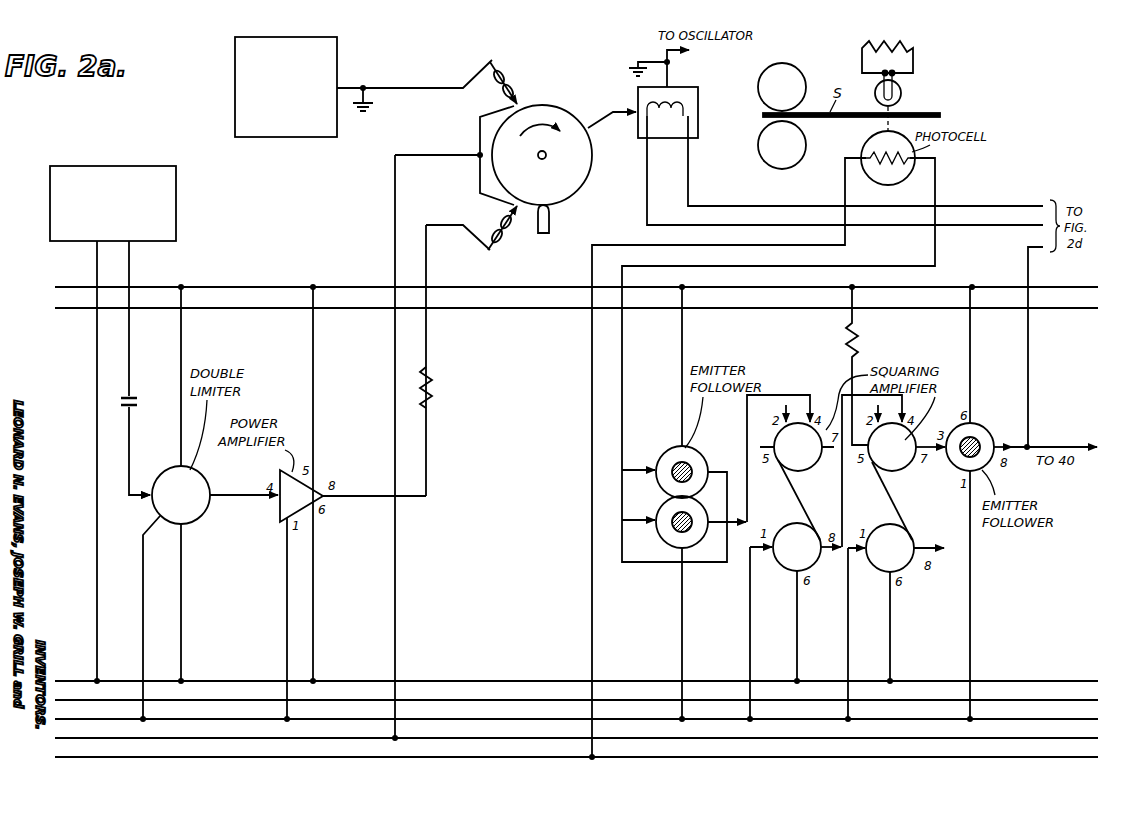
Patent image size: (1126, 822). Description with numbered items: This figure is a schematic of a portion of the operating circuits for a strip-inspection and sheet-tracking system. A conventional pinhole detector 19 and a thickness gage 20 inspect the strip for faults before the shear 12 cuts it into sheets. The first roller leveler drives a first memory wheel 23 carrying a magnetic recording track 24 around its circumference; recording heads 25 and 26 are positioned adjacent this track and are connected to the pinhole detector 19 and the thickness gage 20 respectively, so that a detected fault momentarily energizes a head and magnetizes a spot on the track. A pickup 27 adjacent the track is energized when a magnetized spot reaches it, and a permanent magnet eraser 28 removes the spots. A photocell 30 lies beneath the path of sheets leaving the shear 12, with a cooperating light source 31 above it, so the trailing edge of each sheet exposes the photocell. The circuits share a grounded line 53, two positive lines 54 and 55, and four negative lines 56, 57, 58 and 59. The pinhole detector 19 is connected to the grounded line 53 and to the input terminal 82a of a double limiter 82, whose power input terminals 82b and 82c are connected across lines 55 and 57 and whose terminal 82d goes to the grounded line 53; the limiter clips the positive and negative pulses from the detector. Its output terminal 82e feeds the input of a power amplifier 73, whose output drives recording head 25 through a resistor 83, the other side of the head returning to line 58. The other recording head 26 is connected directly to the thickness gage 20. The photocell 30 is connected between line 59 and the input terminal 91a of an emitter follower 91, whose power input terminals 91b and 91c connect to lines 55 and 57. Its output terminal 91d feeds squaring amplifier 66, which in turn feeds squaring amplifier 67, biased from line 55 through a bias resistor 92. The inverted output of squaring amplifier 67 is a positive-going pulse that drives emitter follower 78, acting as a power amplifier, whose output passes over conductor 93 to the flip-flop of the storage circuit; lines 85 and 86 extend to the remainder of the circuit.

The shear 12 is at (766, 96).
The pinhole detector 19 is at (167, 202).
The thickness gage 20 is at (328, 50).
The first memory wheel 23 is at (553, 187).
The magnetic recording track 24 is at (565, 113).
The recording head 25 is at (505, 242).
The recording head 26 is at (511, 82).
The pickup 27 is at (699, 104).
The permanent magnet eraser 28 is at (550, 222).
The photocell 30 is at (867, 150).
The light source 31 is at (902, 93).
The grounded line 53 is at (499, 681).
The line 54 is at (488, 310).
The line 55 is at (488, 284).
The line 56 is at (499, 700).
The line 57 is at (499, 719).
The line 58 is at (499, 738).
The line 59 is at (499, 757).
The squaring amplifier 66 is at (808, 468).
The squaring amplifier 67 is at (893, 471).
The power amplifier 73 is at (285, 505).
The emitter follower 78 is at (986, 425).
The double limiter 82 is at (209, 477).
The input terminal 82a is at (150, 505).
The power input terminal 82b is at (180, 468).
The power input terminal 82c is at (153, 522).
The terminal 82d is at (183, 526).
The output terminal 82e is at (205, 507).
The resistor 83 is at (434, 382).
The line to fig. 2d 85 is at (1022, 225).
The line to fig. 2d 86 is at (1022, 204).
The emitter follower 91 is at (676, 503).
The input terminal 91a is at (658, 470).
The power input terminal 91b is at (688, 455).
The power input terminal 91c is at (668, 542).
The output terminal 91d is at (706, 544).
The bias resistor 92 is at (858, 335).
The conductor 93 is at (1028, 266).